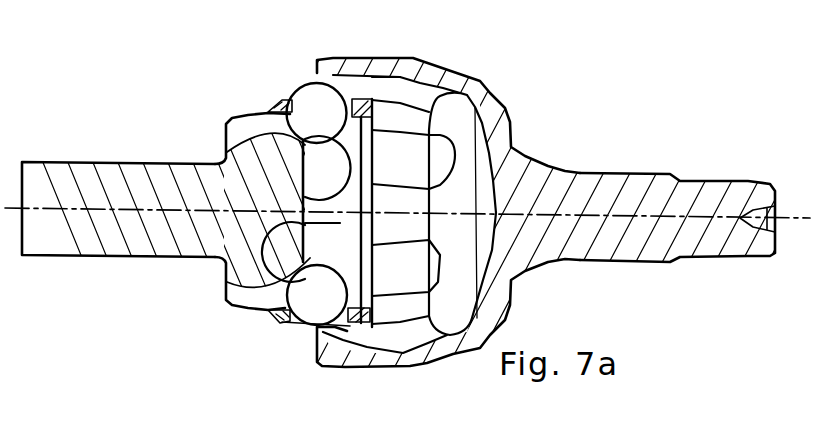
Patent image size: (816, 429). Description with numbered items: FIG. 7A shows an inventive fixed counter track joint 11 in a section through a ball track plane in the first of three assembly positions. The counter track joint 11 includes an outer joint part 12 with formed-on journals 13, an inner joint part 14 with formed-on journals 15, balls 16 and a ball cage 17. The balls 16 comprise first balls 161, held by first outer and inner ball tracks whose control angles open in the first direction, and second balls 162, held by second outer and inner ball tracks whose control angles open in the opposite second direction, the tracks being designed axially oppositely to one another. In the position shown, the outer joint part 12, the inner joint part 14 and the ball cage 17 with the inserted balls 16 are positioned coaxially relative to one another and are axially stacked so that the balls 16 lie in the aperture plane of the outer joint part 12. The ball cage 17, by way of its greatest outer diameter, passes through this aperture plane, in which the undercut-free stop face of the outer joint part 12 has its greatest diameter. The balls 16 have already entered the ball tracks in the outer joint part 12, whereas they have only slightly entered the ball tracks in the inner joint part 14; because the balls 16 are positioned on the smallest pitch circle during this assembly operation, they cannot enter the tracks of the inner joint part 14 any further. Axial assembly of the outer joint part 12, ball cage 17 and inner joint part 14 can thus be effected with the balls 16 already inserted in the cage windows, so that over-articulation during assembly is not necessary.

The counter track joint 11 is at (572, 79).
The outer joint part 12 is at (420, 67).
The journals 13 is at (630, 182).
The inner joint part 14 is at (240, 167).
The journals 15 is at (62, 163).
The balls 16 is at (298, 212).
The first balls 161 is at (313, 104).
The second balls 162 is at (323, 300).
The ball cage 17 is at (276, 325).